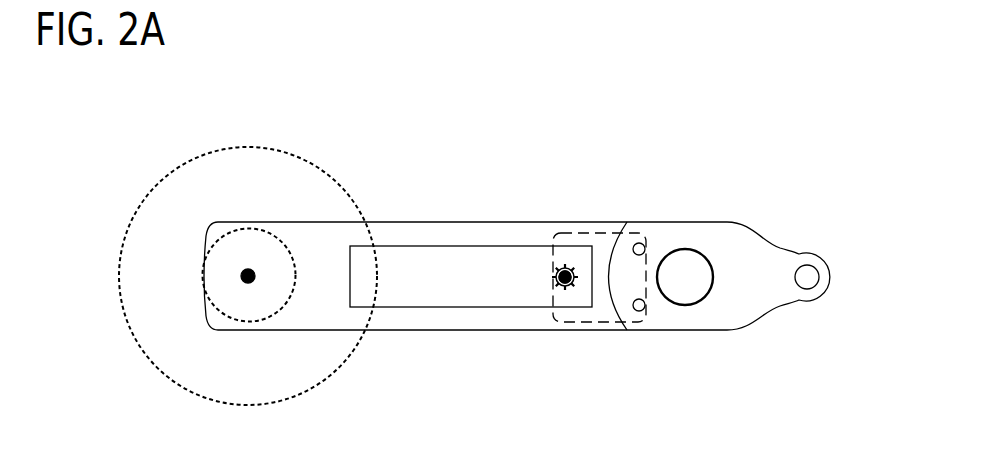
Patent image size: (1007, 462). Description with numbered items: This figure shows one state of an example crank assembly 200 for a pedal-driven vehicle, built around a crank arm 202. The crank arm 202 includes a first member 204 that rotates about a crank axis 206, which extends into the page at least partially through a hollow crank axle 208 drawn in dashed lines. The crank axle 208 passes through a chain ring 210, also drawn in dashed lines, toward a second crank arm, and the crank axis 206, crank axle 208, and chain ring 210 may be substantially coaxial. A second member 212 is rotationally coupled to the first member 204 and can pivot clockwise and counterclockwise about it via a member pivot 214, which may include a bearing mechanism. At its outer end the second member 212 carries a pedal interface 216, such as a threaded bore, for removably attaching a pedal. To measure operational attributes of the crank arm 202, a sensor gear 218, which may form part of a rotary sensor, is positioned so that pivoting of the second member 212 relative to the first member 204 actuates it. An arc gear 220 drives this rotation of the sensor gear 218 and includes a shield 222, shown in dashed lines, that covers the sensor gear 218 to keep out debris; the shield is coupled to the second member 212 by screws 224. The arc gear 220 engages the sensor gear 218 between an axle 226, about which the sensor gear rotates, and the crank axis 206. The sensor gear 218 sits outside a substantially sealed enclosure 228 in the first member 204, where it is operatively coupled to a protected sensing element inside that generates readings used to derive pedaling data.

The crank assembly 200 is at (503, 137).
The crank arm 202 is at (471, 204).
The first member 204 is at (445, 331).
The crank axis 206 is at (248, 284).
The crank axle 208 is at (270, 234).
The chain ring 210 is at (273, 150).
The second member 212 is at (735, 331).
The member pivot 214 is at (688, 305).
The pedal interface 216 is at (821, 277).
The sensor gear 218 is at (566, 266).
The arc gear 220 is at (598, 324).
The shield 222 is at (646, 245).
The screws 224 is at (639, 243).
The axle 226 is at (553, 273).
The enclosure 228 is at (390, 246).